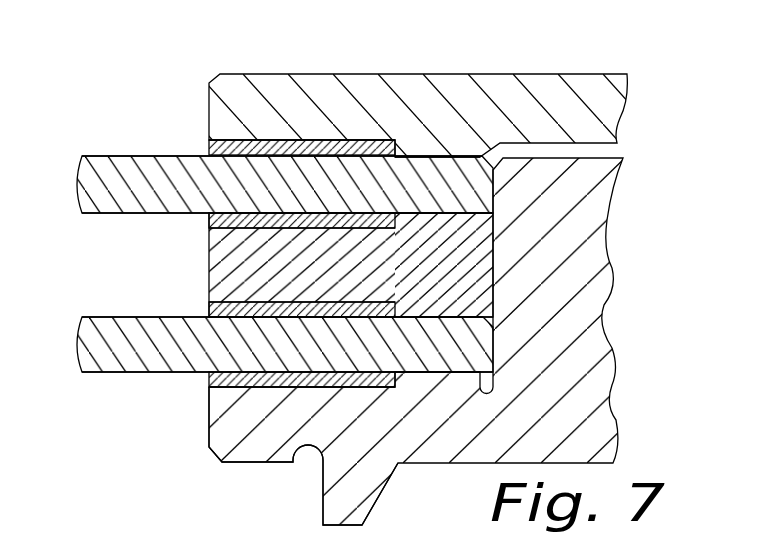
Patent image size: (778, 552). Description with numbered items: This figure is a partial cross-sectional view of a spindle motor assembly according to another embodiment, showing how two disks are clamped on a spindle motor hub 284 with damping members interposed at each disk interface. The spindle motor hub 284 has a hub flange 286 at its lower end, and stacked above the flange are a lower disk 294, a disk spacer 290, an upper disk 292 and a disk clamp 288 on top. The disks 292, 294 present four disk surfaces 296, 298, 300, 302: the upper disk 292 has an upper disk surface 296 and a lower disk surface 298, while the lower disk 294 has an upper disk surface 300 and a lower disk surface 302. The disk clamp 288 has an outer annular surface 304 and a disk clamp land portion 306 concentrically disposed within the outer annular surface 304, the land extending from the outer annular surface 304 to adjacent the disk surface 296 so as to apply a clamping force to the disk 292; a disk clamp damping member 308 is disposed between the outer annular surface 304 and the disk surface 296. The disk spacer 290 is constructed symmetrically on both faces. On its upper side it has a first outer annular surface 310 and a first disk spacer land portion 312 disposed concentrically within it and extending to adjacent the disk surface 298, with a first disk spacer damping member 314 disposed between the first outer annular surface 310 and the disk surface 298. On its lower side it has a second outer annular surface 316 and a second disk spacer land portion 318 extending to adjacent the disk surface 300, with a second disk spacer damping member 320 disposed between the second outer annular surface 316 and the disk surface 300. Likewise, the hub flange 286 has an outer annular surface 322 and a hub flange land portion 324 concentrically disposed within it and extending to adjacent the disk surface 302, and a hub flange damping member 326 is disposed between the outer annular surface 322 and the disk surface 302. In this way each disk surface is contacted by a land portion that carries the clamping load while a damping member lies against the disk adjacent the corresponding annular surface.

The spindle motor hub 284 is at (614, 360).
The hub flange 286 is at (209, 440).
The disk clamp 288 is at (616, 104).
The disk spacer 290 is at (465, 269).
The disk 292 is at (76, 177).
The disk 294 is at (74, 339).
The disk surface 296 is at (97, 154).
The disk surface 298 is at (98, 212).
The disk surface 300 is at (97, 316).
The disk surface 302 is at (100, 372).
The outer annular surface 304 is at (429, 143).
The disk clamp land portion 306 is at (272, 129).
The disk clamp damping member 308 is at (212, 147).
The first outer annular surface 310 is at (451, 226).
The first disk spacer land portion 312 is at (255, 239).
The first disk spacer damping member 314 is at (214, 220).
The second outer annular surface 316 is at (454, 303).
The second disk spacer land portion 318 is at (300, 290).
The second disk spacer damping member 320 is at (214, 308).
The outer annular surface 322 is at (425, 385).
The hub flange land portion 324 is at (255, 397).
The hub flange damping member 326 is at (214, 380).